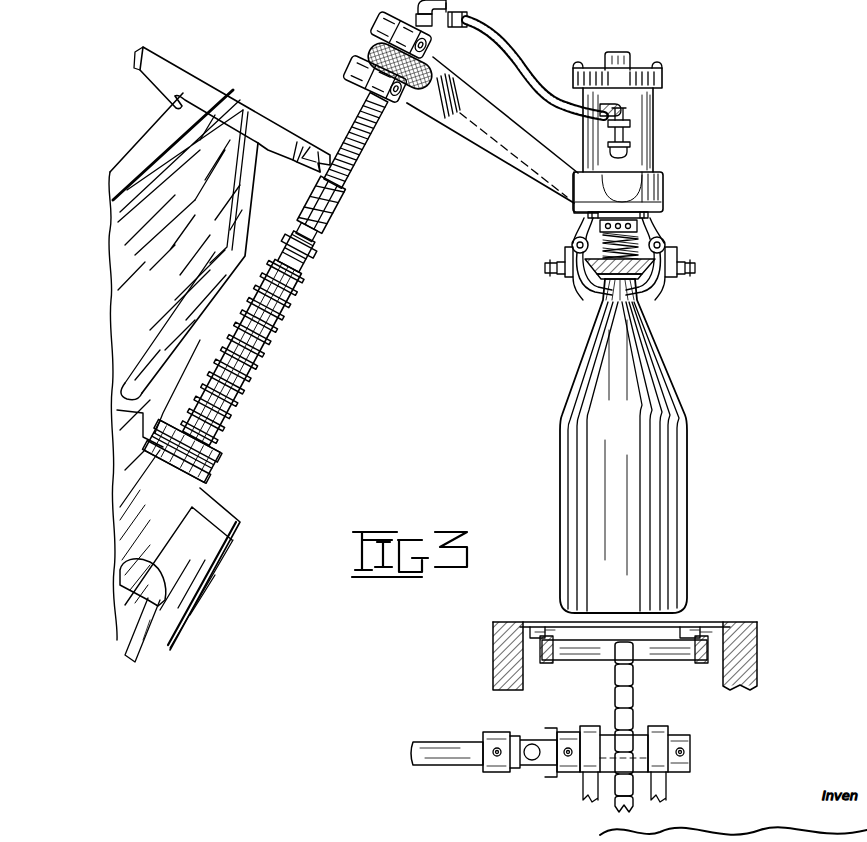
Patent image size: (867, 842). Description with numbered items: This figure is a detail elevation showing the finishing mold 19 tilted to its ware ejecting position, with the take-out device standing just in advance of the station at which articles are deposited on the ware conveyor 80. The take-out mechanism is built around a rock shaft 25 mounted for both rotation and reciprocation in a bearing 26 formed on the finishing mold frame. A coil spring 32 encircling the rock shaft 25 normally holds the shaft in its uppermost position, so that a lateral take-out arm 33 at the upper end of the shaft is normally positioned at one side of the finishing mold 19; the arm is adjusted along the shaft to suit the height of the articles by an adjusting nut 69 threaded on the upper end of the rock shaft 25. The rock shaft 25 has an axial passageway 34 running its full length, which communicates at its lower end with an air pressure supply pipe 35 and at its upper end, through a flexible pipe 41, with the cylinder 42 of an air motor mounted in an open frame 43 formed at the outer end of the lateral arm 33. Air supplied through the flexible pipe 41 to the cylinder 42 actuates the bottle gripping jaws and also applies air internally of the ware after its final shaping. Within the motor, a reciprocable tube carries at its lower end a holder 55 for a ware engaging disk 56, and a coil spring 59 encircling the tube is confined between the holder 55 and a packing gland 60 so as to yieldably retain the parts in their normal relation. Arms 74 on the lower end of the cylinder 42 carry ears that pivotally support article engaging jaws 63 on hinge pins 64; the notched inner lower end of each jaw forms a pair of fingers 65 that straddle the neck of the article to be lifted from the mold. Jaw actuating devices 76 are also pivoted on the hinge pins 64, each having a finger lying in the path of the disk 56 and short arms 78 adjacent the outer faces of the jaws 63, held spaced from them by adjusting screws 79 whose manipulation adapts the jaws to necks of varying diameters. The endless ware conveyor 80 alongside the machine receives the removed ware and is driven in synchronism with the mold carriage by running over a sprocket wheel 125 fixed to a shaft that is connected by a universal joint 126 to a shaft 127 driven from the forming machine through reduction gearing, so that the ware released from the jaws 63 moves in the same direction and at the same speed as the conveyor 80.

The finishing mold 19 is at (205, 88).
The rock shaft 25 is at (316, 249).
The bearing 26 is at (186, 489).
The coil spring 32 is at (283, 305).
The lateral take-out arm 33 is at (470, 132).
The axial passageway 34 is at (337, 206).
The air pressure supply pipe 35 is at (143, 650).
The flexible pipe 41 is at (490, 30).
The cylinder 42 is at (654, 140).
The open frame 43 is at (663, 190).
The holder 55 is at (586, 272).
The ware engaging disk 56 is at (590, 290).
The coil spring 59 is at (578, 244).
The packing gland 60 is at (598, 224).
The article engaging jaws 63 is at (660, 292).
The hinge pin 64 is at (668, 244).
The fingers 65 is at (640, 308).
The adjusting nut 69 is at (380, 46).
The arms 74 is at (650, 224).
The jaw actuating devices 76 is at (677, 258).
The short arms 78 is at (670, 280).
The adjusting screws 79 is at (695, 270).
The endless ware conveyor 80 is at (733, 622).
The sprocket wheel 125 is at (635, 707).
The universal joint 126 is at (497, 772).
The shaft 127 is at (436, 765).